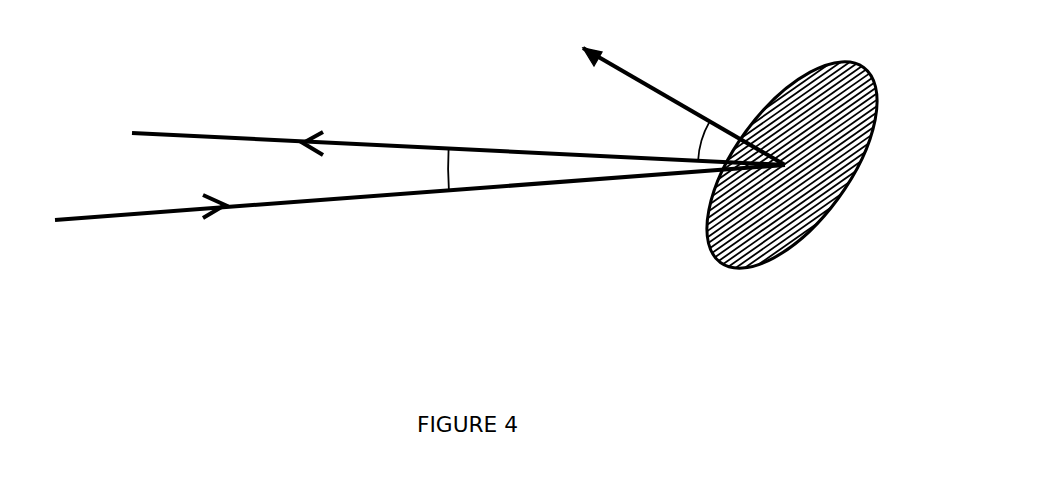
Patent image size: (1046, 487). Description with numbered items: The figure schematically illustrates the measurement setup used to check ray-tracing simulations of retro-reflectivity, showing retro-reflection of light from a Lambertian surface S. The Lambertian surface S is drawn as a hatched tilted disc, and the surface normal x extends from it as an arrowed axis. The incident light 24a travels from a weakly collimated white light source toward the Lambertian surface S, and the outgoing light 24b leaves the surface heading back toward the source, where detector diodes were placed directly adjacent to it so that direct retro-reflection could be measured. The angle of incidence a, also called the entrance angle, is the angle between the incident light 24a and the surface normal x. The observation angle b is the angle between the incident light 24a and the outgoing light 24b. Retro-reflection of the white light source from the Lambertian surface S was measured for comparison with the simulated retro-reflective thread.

The Lambertian surface S is at (800, 92).
The incident light 24a is at (115, 213).
The outgoing light 24b is at (262, 138).
The surface normal x is at (674, 98).
The angle of incidence a is at (692, 141).
The observation angle b is at (436, 170).